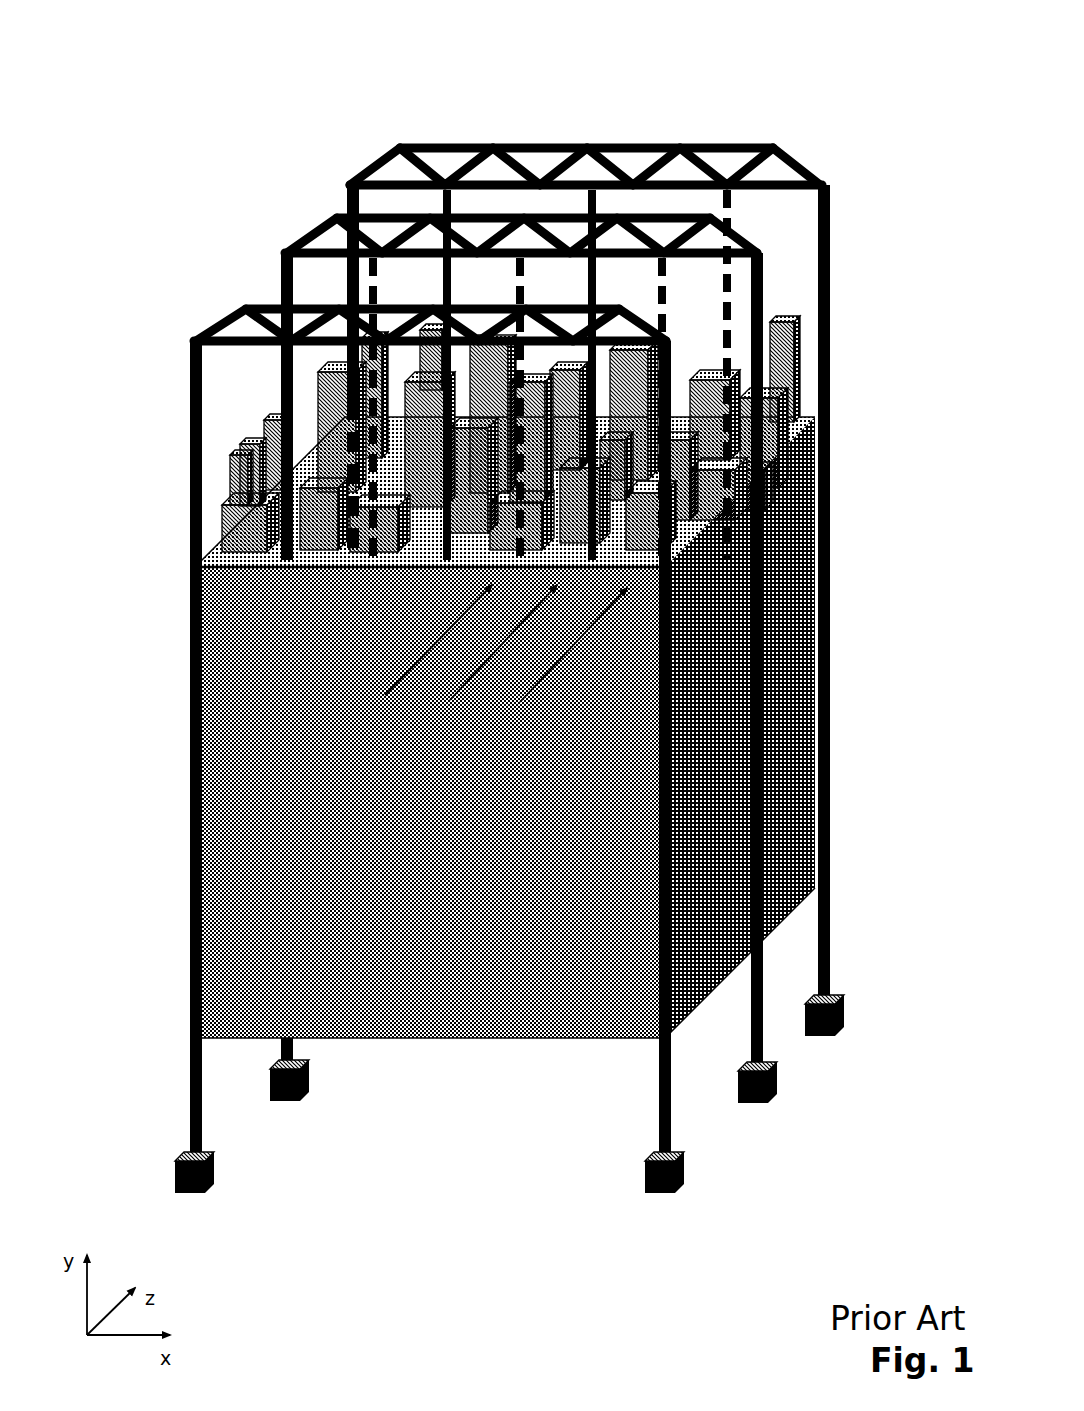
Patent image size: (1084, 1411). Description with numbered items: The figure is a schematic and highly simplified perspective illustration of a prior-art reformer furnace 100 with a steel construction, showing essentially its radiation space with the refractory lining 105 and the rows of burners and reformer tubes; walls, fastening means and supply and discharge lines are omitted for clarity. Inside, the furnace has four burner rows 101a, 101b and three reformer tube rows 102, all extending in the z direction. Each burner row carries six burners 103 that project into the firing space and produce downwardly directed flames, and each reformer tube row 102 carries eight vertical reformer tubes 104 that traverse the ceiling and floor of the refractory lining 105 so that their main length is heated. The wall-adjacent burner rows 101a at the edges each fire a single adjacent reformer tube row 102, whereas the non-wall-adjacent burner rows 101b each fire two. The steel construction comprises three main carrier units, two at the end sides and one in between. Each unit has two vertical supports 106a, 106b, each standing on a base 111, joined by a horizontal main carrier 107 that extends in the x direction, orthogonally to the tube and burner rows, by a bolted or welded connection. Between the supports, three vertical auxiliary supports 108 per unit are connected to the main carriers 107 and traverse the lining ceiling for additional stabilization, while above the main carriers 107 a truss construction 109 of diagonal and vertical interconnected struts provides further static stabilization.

The reformer furnace 100 is at (98, 71).
The wall-adjacent burner rows 101a is at (562, 658).
The non-wall-adjacent burner rows 101b is at (422, 655).
The reformer tube rows 102 is at (490, 655).
The burners 103 is at (225, 510).
The reformer tubes 104 is at (300, 535).
The refractory lining 105 is at (305, 845).
The vertical support 106a is at (830, 258).
The vertical support 106b is at (352, 205).
The horizontal main carrier 107 is at (788, 165).
The auxiliary supports 108 is at (730, 300).
The truss construction 109 is at (445, 160).
The base 111 is at (838, 1003).